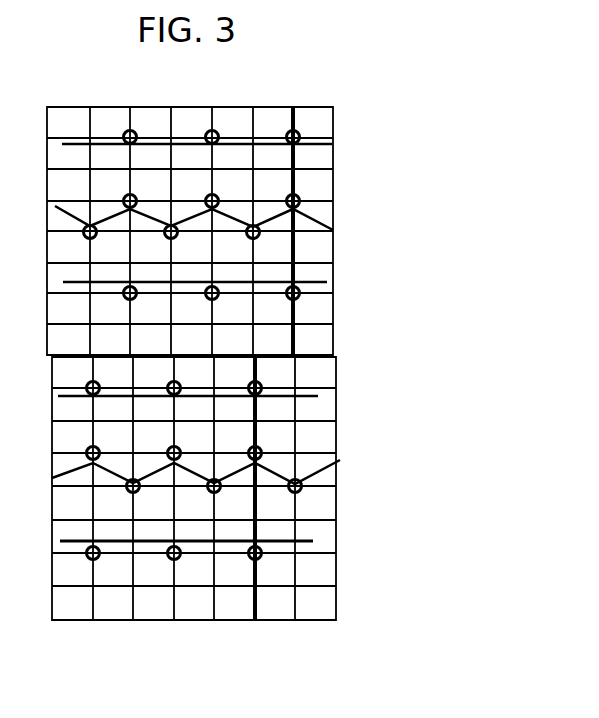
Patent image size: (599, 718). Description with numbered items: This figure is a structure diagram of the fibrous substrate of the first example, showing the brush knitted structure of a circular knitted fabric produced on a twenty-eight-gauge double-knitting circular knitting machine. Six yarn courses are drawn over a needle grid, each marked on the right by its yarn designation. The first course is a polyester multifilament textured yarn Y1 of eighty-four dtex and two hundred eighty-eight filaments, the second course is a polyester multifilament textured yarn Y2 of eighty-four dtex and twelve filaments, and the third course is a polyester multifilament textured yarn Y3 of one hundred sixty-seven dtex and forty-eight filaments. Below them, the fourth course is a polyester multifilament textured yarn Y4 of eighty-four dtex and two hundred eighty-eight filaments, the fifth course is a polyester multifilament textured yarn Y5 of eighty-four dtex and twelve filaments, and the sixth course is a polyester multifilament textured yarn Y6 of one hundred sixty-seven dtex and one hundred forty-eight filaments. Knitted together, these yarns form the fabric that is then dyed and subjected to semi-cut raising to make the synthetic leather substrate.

The polyester multifilament textured yarn Y1 is at (312, 144).
The polyester multifilament textured yarn Y2 is at (320, 216).
The polyester multifilament textured yarn Y3 is at (300, 293).
The polyester multifilament textured yarn Y4 is at (315, 383).
The polyester multifilament textured yarn Y5 is at (315, 478).
The polyester multifilament textured yarn Y6 is at (310, 547).